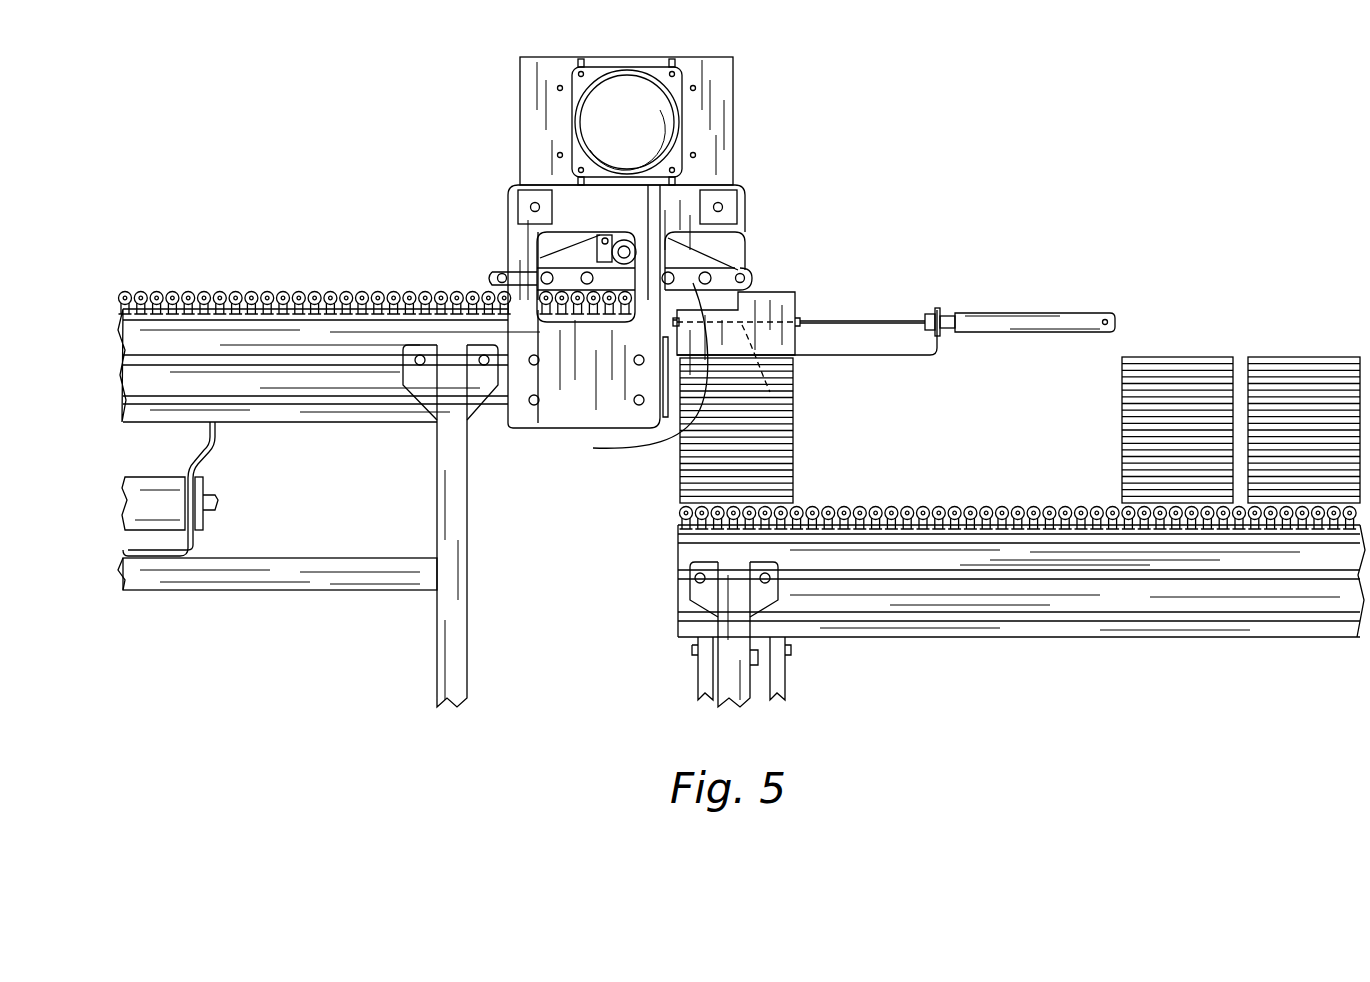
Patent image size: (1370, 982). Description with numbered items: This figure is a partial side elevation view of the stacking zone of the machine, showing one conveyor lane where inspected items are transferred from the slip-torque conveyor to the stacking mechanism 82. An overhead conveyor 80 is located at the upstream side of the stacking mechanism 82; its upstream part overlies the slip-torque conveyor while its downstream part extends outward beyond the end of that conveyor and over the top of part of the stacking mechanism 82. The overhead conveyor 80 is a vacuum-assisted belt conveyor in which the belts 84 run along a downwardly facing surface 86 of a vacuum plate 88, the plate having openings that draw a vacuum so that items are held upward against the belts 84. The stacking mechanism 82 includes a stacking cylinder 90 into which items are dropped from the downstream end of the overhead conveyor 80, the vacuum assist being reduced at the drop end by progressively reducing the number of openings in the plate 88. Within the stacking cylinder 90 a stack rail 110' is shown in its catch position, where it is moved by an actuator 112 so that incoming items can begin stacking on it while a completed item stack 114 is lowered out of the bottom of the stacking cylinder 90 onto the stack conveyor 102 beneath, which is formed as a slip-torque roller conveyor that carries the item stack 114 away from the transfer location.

The overhead conveyor 80 is at (745, 260).
The stacking mechanism 82 is at (807, 296).
The belts 84 is at (690, 258).
The downwardly facing surface 86 is at (635, 373).
The vacuum plate 88 is at (567, 283).
The stacking cylinder 90 is at (790, 305).
The stack conveyor 102 is at (867, 498).
The stack rail 110' is at (818, 361).
The actuator 112 is at (990, 312).
The item stack 114 is at (697, 430).